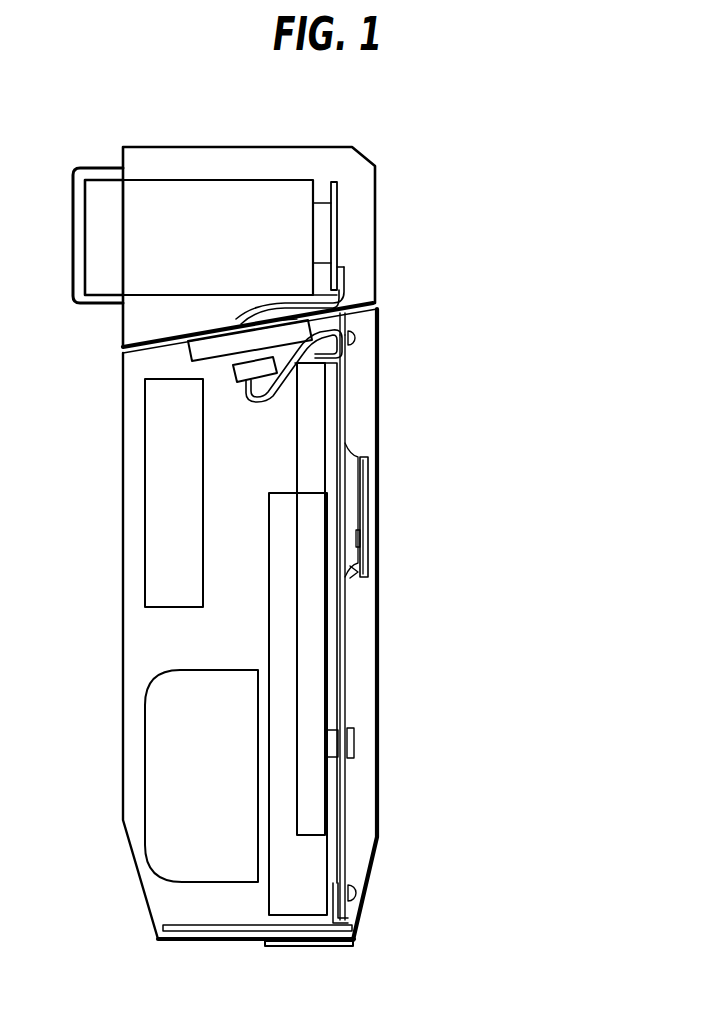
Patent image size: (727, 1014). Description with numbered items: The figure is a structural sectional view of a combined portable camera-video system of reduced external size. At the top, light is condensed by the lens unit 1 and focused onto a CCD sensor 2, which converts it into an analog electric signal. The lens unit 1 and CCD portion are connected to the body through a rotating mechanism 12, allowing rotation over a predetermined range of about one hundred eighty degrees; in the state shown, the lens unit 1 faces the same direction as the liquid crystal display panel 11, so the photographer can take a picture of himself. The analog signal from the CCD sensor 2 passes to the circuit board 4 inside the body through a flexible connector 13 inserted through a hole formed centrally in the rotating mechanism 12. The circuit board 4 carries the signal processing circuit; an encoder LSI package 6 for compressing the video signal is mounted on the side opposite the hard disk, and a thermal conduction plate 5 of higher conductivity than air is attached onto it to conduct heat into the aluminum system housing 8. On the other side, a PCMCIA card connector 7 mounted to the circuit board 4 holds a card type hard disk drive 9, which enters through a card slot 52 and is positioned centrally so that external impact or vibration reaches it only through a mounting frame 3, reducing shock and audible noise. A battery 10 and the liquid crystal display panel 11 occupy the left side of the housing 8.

The lens unit 1 is at (197, 202).
The CCD sensor 2 is at (337, 220).
The mounting frame 3 is at (352, 333).
The circuit board 4 is at (347, 383).
The thermal conduction plate 5 is at (368, 475).
The LSI package 6 is at (362, 577).
The PCMCIA card connector 7 is at (312, 660).
The system housing 8 is at (382, 763).
The card type hard disk drive 9 is at (308, 858).
The battery 10 is at (160, 755).
The liquid crystal display panel 11 is at (158, 437).
The rotating mechanism 12 is at (222, 338).
The flexible connector 13 is at (240, 319).
The card slot 52 is at (325, 945).